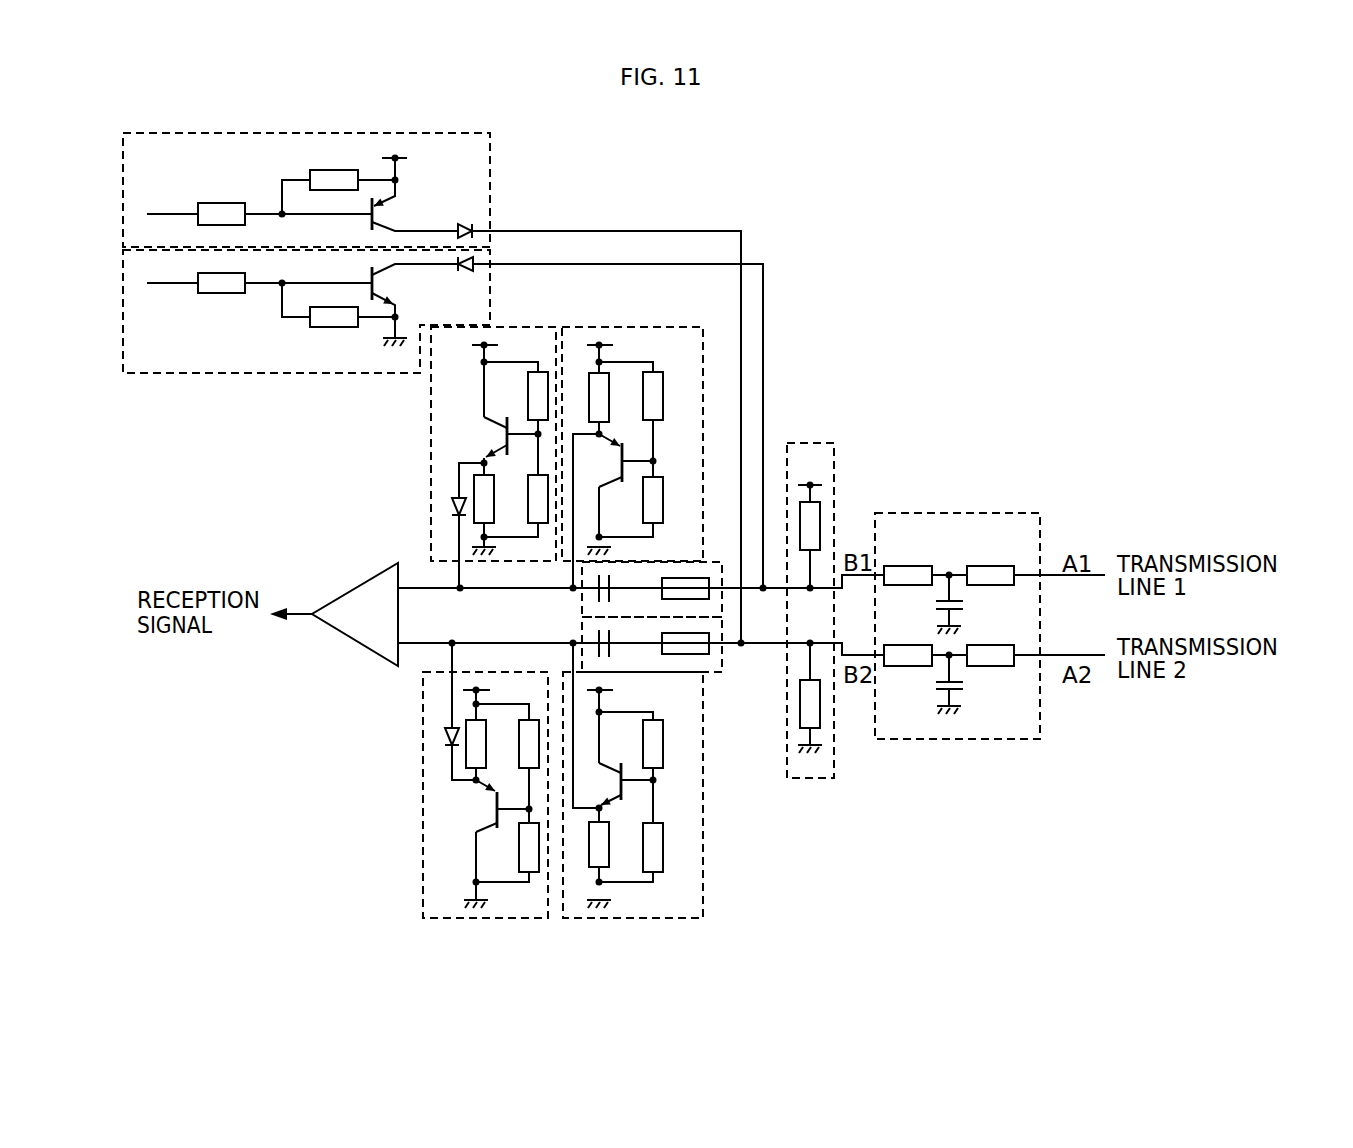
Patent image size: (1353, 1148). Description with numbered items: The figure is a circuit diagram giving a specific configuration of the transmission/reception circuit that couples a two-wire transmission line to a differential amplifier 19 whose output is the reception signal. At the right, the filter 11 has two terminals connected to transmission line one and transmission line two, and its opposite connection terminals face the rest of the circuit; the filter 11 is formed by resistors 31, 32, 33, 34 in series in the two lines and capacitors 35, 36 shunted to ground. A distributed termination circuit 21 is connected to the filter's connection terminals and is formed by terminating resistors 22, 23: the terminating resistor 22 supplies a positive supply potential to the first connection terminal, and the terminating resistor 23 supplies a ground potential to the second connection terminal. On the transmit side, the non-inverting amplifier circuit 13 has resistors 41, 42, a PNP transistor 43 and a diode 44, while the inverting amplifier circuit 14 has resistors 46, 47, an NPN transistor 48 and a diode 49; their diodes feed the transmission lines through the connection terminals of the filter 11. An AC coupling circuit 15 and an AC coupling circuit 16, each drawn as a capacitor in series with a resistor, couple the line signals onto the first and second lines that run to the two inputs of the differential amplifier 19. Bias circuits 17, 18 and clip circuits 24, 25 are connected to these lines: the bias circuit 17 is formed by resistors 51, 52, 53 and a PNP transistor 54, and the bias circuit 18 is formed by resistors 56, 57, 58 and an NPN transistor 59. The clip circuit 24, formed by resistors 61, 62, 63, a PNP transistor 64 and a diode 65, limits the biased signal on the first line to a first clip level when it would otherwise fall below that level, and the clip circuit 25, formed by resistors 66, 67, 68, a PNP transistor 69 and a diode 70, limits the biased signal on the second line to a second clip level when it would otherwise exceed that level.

The filter 11 is at (957, 603).
The non-inverting amplifier circuit 13 is at (432, 388).
The inverting amplifier circuit 14 is at (443, 419).
The AC coupling circuit 15 is at (711, 560).
The AC coupling circuit 16 is at (715, 673).
The bias circuit 17 is at (632, 435).
The bias circuit 18 is at (660, 780).
The differential amplifier 19 is at (350, 637).
The distributed termination circuit 21 is at (835, 587).
The terminating resistor 22 is at (820, 515).
The terminating resistor 23 is at (825, 720).
The clip circuit 24 is at (460, 457).
The clip circuit 25 is at (452, 780).
The resistor 31 is at (912, 566).
The resistor 32 is at (992, 566).
The resistor 33 is at (912, 645).
The resistor 34 is at (1012, 666).
The capacitor 35 is at (965, 605).
The capacitor 36 is at (935, 685).
The resistor 41 is at (224, 201).
The resistor 42 is at (328, 170).
The PNP transistor 43 is at (396, 217).
The diode 44 is at (464, 221).
The resistor 46 is at (225, 296).
The resistor 47 is at (325, 330).
The NPN transistor 48 is at (383, 285).
The diode 49 is at (471, 277).
The resistor 51 is at (611, 407).
The resistor 52 is at (665, 395).
The resistor 53 is at (665, 490).
The PNP transistor 54 is at (612, 464).
The resistor 56 is at (610, 850).
The resistor 57 is at (667, 737).
The resistor 58 is at (667, 838).
The NPN transistor 59 is at (613, 791).
The resistor 61 is at (527, 397).
The resistor 62 is at (525, 492).
The resistor 63 is at (495, 502).
The PNP transistor 64 is at (493, 436).
The diode 65 is at (460, 498).
The resistor 66 is at (501, 802).
The resistor 67 is at (520, 846).
The resistor 68 is at (518, 763).
The PNP transistor 69 is at (488, 813).
The diode 70 is at (454, 737).